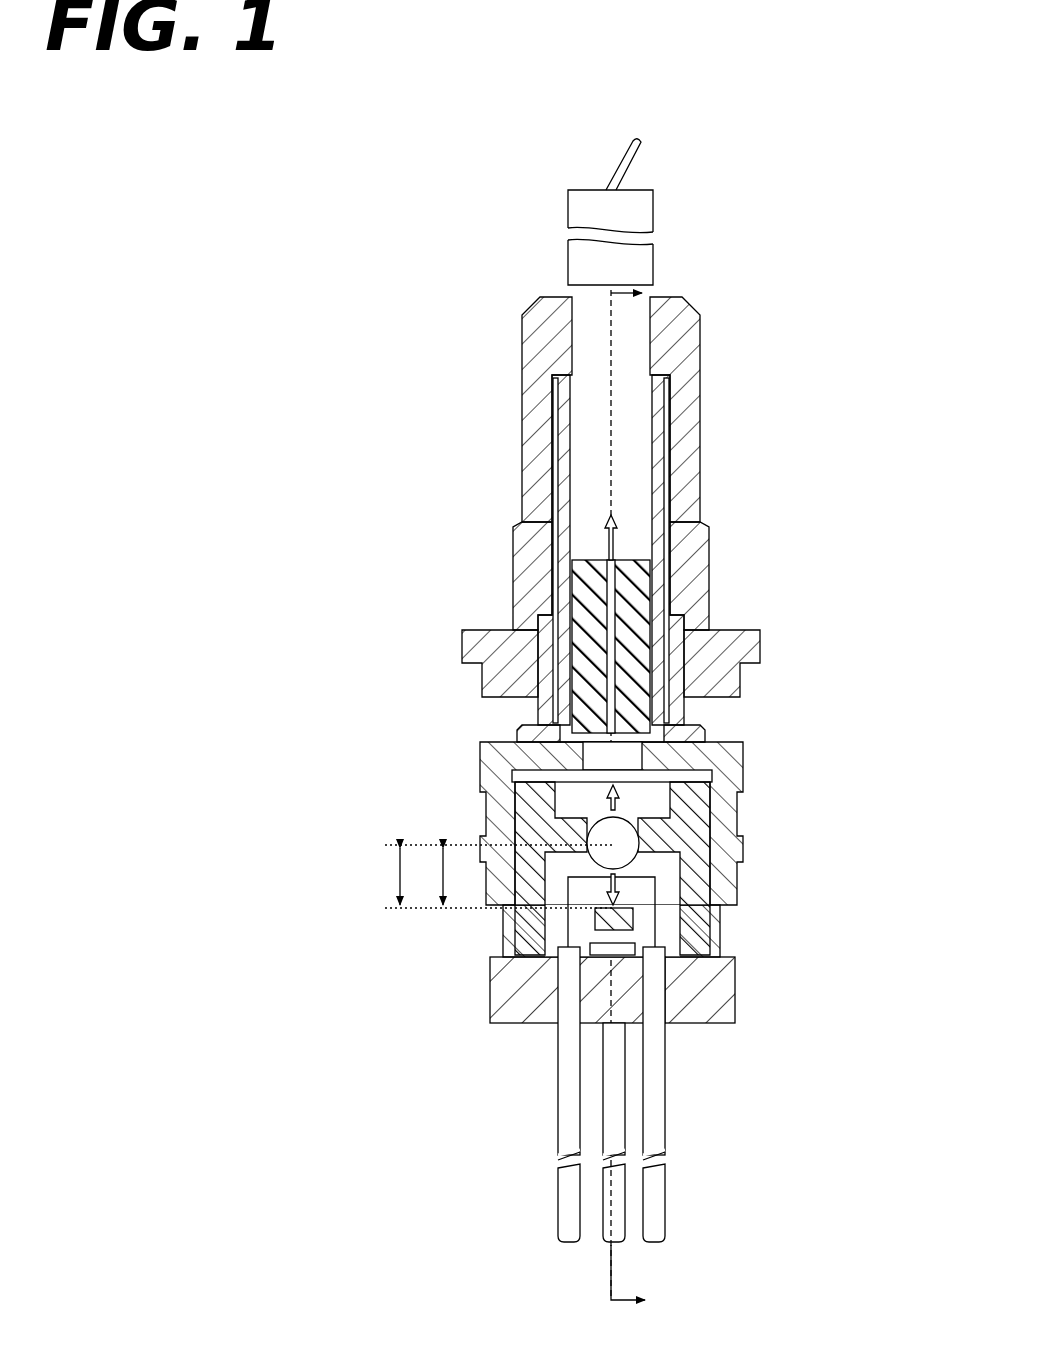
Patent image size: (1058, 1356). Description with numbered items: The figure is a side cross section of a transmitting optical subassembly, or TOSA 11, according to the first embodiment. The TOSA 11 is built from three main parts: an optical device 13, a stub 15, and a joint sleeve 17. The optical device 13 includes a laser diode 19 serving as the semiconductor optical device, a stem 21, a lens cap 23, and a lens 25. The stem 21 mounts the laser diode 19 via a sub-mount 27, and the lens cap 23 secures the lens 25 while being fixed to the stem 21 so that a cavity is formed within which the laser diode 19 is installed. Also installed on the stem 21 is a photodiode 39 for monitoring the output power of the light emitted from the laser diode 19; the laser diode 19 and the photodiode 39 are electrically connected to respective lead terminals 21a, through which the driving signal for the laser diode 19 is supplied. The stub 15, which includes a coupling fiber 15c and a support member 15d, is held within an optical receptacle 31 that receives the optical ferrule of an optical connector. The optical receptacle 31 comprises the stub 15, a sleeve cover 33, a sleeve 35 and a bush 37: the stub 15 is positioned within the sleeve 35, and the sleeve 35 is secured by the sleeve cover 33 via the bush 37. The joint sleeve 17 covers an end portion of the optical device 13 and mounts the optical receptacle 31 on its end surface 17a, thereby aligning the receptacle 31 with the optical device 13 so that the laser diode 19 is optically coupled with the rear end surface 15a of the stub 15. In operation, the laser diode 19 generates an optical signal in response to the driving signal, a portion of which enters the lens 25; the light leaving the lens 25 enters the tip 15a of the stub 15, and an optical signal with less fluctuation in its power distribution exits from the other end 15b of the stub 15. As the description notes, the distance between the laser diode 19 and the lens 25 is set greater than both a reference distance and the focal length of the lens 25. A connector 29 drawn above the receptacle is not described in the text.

The transmitting optical subassembly (TOSA) 11 is at (652, 727).
The optical device 13 is at (833, 838).
The stub 15 is at (530, 558).
The end surface (tip) of the stub 15a is at (540, 722).
The other end of the stub 15b is at (578, 560).
The coupling fiber 15c is at (555, 610).
The support member 15d is at (580, 598).
The joint sleeve 17 is at (673, 813).
The end surface of the joint sleeve 17a is at (735, 743).
The laser diode (LD) 19 is at (738, 897).
The stem 21 is at (736, 975).
The lead terminals 21a is at (655, 1108).
The lens cap 23 is at (722, 940).
The lens 25 is at (745, 852).
The sub-mount 27 is at (517, 888).
The connector 29 is at (655, 205).
The optical receptacle 31 is at (658, 497).
The sleeve cover 33 is at (700, 452).
The sleeve 35 is at (700, 492).
The bush 37 is at (635, 631).
The photodiode (PD) 39 is at (740, 990).